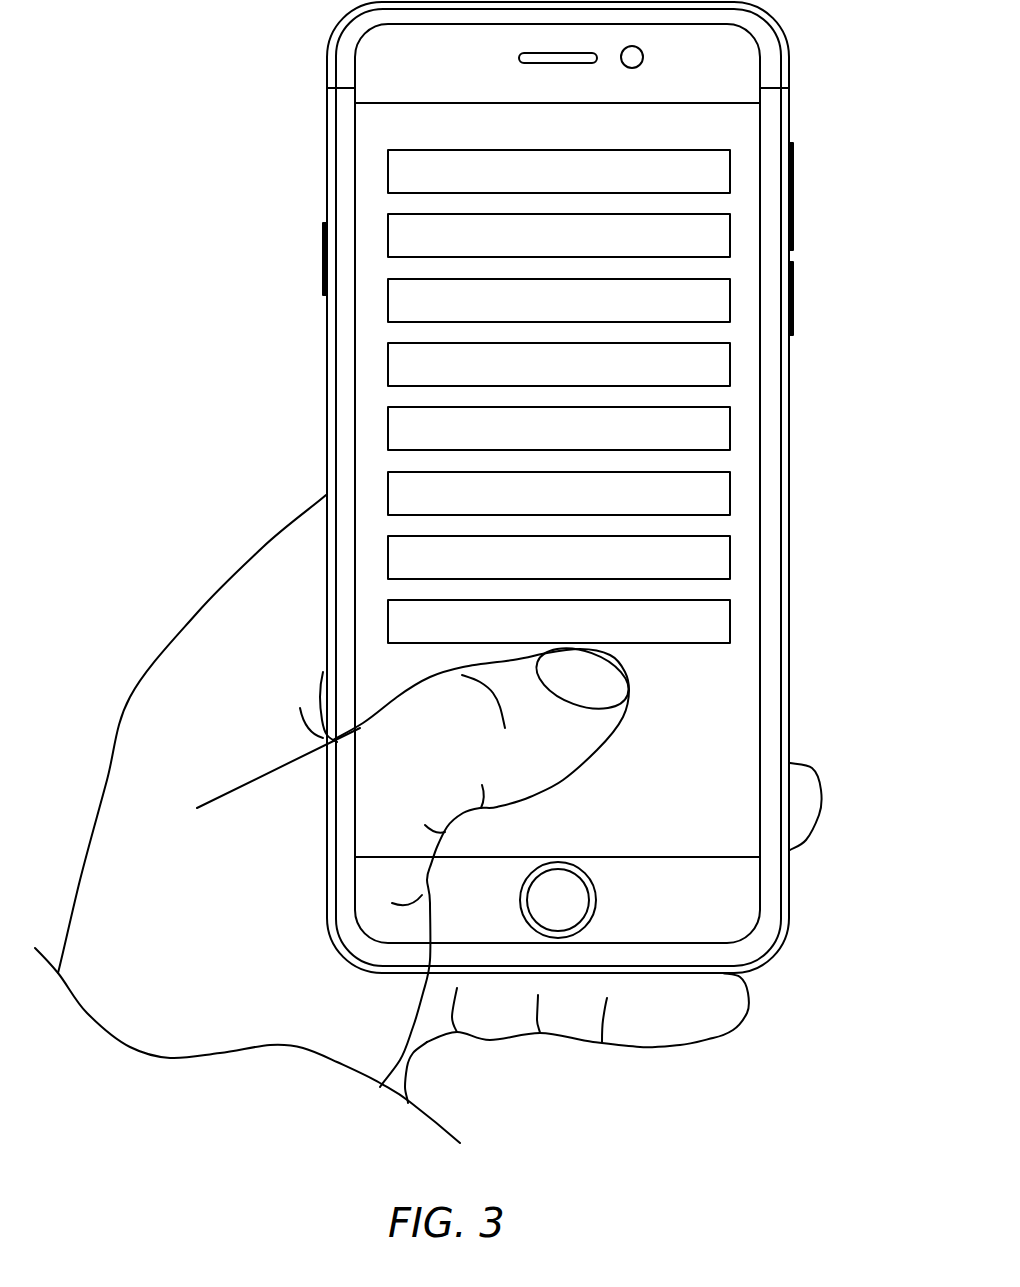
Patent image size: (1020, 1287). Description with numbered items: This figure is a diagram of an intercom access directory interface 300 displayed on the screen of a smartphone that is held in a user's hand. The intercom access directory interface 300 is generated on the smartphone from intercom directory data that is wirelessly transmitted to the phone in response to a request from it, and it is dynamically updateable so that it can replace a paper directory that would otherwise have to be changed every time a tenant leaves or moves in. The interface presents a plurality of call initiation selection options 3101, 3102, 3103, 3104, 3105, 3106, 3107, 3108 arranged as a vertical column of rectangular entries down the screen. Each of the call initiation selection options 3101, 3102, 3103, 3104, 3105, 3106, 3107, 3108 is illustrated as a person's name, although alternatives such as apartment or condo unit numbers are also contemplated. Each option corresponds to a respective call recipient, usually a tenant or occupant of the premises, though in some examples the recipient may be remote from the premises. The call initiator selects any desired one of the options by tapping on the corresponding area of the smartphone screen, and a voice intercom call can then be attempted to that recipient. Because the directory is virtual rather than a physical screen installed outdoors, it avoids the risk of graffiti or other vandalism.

The intercom access directory interface 300 is at (393, 128).
The call initiation selection option 3101 is at (730, 172).
The call initiation selection option 3102 is at (730, 236).
The call initiation selection option 3103 is at (730, 301).
The call initiation selection option 3104 is at (730, 365).
The call initiation selection option 3105 is at (730, 429).
The call initiation selection option 3106 is at (730, 494).
The call initiation selection option 3107 is at (730, 558).
The call initiation selection option 3108 is at (730, 622).